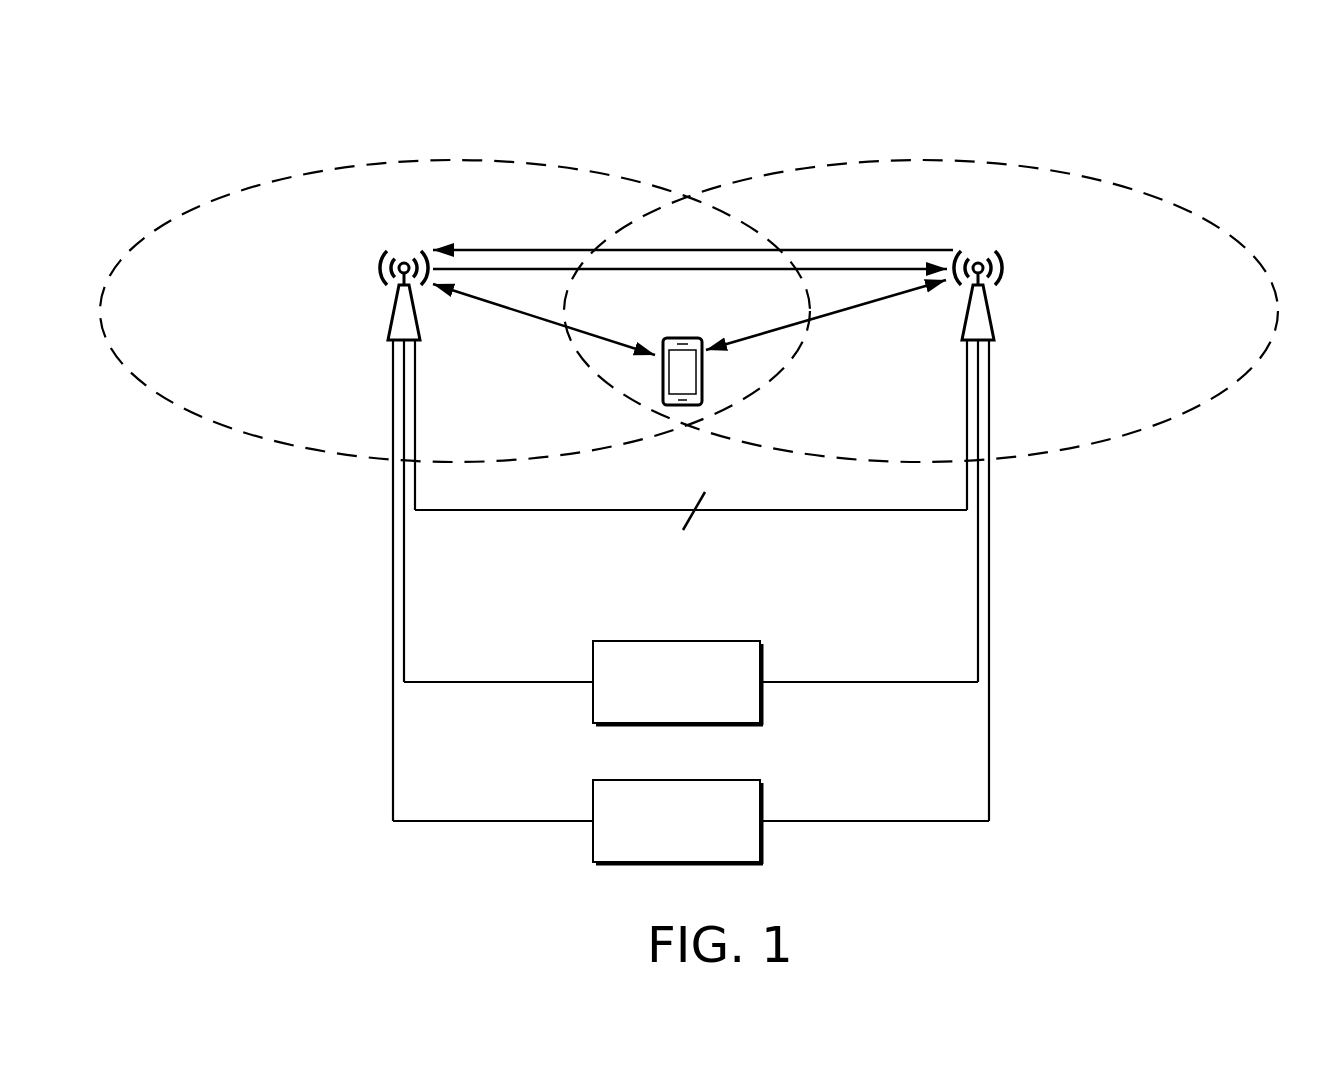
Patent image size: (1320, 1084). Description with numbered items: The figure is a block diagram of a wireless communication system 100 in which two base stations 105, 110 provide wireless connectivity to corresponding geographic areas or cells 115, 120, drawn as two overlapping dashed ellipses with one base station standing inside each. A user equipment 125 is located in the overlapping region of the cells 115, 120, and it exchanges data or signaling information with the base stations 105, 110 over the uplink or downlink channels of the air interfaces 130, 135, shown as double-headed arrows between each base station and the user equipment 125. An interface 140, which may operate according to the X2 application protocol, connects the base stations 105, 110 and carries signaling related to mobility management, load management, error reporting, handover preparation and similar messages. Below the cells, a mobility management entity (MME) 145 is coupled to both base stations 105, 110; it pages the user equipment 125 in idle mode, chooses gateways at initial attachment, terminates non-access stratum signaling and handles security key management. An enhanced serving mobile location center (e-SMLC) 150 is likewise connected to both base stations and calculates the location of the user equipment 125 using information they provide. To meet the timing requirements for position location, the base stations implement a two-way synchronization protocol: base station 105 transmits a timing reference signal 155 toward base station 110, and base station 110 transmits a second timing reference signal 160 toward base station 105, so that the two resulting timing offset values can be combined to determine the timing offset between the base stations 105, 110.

The wireless communication system 100 is at (1198, 91).
The base station 105 is at (388, 336).
The base station 110 is at (995, 340).
The cell 115 is at (313, 163).
The cell 120 is at (806, 163).
The user equipment 125 is at (688, 338).
The air interface 130 is at (548, 322).
The air interface 135 is at (824, 318).
The interface 140 is at (694, 500).
The mobility management entity (MME) 145 is at (593, 656).
The enhanced serving mobile location center (e-SMLC) 150 is at (593, 797).
The timing reference signal 155 is at (540, 265).
The second timing reference signal 160 is at (840, 250).